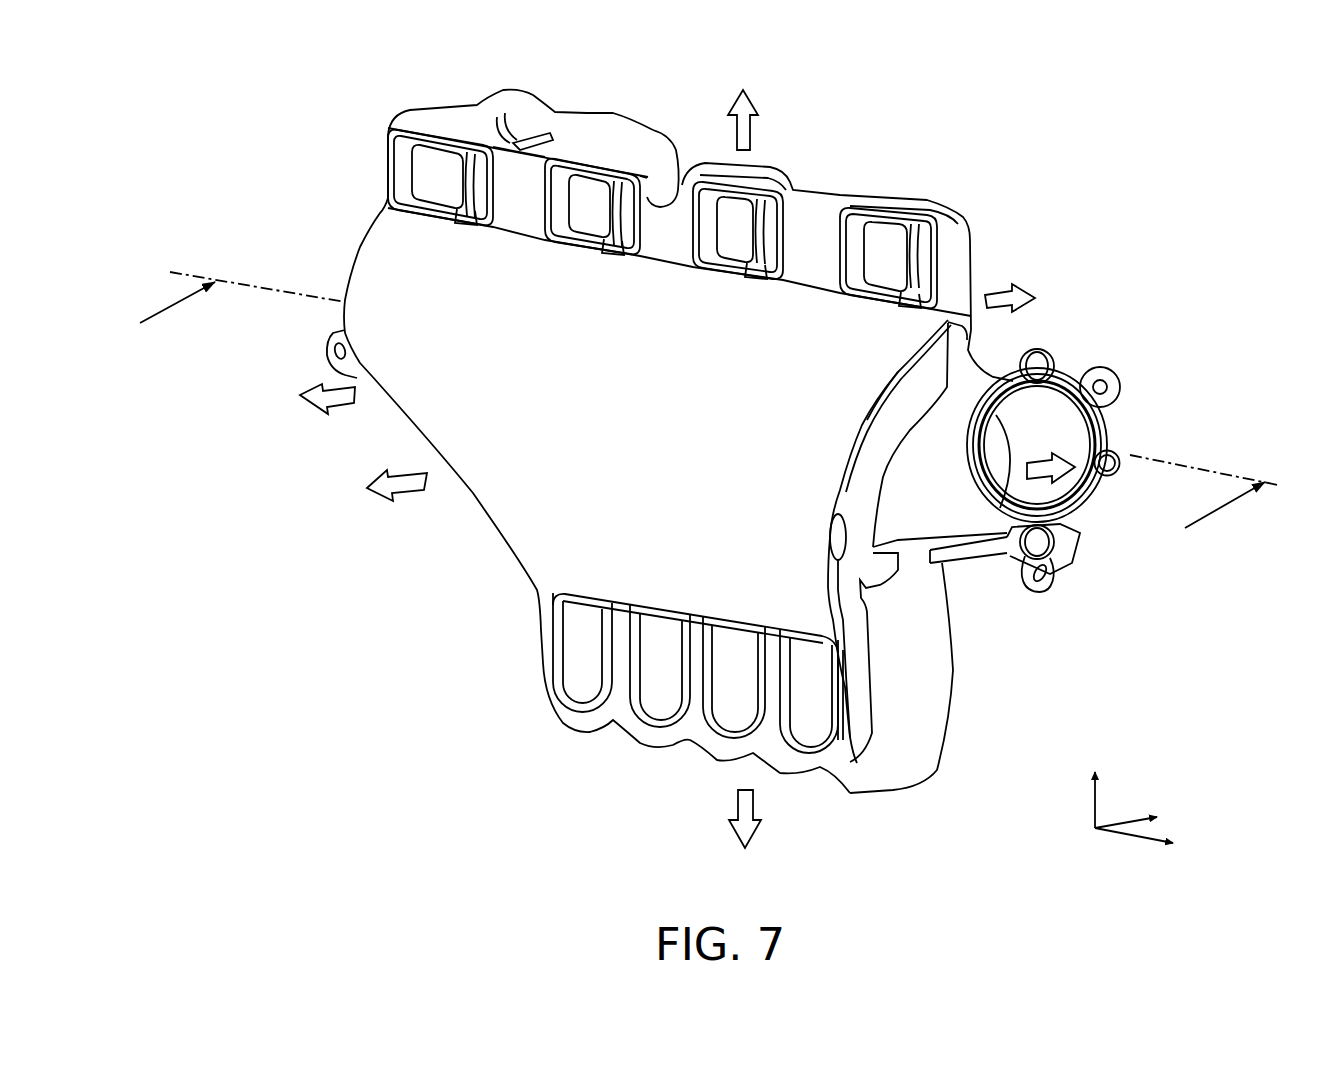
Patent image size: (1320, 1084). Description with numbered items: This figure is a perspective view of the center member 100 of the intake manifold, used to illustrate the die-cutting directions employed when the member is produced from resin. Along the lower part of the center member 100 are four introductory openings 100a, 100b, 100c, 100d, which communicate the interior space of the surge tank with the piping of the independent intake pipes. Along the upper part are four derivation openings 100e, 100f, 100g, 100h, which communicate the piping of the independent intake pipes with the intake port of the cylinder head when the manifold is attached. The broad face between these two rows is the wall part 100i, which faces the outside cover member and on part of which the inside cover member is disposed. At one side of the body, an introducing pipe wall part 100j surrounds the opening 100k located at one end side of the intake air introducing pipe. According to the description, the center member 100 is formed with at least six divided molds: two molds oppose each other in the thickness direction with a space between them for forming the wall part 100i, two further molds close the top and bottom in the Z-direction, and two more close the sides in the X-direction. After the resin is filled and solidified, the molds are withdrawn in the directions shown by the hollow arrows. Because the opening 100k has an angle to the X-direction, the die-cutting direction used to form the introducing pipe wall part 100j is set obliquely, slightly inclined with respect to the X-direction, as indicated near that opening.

The center member 100 is at (948, 216).
The opening 100a is at (587, 645).
The opening 100b is at (658, 665).
The opening 100c is at (738, 688).
The opening 100d is at (807, 703).
The opening 100e is at (446, 158).
The opening 100f is at (588, 188).
The opening 100g is at (741, 217).
The opening 100h is at (881, 245).
The wall part 100i is at (474, 315).
The introducing pipe wall part 100j is at (1056, 364).
The opening 100k is at (1004, 455).